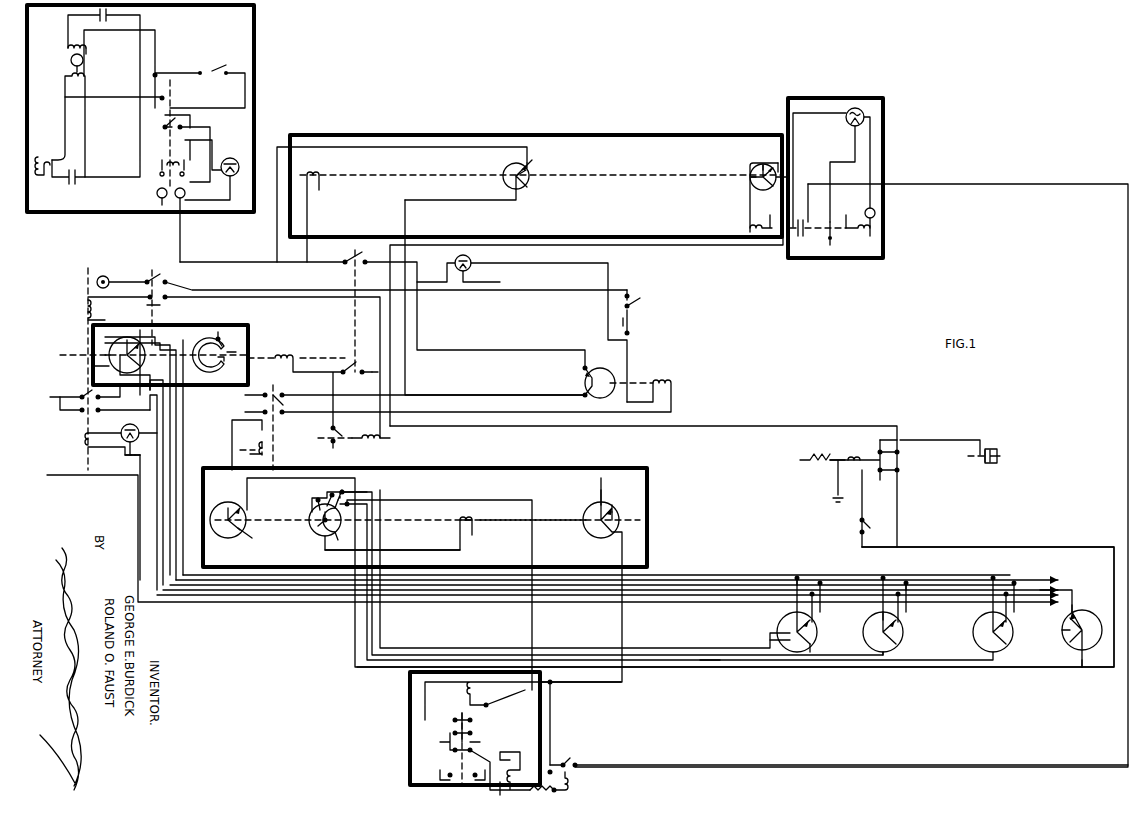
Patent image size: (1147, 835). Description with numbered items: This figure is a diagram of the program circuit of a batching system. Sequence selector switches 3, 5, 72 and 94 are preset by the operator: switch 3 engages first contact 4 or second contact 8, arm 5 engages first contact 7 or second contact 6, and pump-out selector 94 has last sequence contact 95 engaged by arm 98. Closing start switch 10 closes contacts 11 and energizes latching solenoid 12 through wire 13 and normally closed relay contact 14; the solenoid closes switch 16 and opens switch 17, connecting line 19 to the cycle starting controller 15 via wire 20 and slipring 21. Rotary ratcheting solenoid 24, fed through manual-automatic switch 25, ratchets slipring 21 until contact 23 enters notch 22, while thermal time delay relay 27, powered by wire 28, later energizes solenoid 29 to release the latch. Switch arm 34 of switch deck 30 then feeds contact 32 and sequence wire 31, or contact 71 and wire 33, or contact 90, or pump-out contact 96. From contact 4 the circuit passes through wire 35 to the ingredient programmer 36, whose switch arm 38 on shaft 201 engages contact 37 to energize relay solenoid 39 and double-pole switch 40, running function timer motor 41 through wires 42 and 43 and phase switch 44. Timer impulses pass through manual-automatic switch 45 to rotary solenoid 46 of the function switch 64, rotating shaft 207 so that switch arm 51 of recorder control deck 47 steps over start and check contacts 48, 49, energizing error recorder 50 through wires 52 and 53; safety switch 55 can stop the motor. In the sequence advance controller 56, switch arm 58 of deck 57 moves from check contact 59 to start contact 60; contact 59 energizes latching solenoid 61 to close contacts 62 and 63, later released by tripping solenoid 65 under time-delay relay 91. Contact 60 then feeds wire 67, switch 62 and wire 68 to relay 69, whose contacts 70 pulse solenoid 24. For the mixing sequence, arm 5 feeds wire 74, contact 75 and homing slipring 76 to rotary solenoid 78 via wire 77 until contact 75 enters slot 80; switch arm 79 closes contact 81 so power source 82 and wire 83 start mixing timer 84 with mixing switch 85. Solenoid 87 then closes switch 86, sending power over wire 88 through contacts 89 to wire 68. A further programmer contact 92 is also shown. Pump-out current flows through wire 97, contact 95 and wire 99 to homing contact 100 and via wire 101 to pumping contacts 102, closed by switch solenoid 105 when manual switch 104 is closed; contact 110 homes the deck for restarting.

The sequence selector switch 3 is at (777, 626).
The first contact 4 is at (797, 585).
The sequence selector switch arm 5 is at (893, 640).
The second contact 6 is at (906, 612).
The first contact 7 is at (875, 615).
The second contact 8 is at (805, 640).
The start switch 10 is at (170, 280).
The normally open contacts 11 is at (170, 300).
The latching solenoid 12 is at (84, 310).
The wire 13 is at (233, 297).
The normally closed relay contact 14 is at (900, 470).
The cycle starting controller 15 is at (207, 385).
The normally open switch 16 is at (80, 416).
The normally closed switch 17 is at (75, 392).
The power source line 19 is at (58, 400).
The wire 20 is at (150, 398).
The homing-deck slipring 21 is at (205, 345).
The notch 22 is at (236, 352).
The contact 23 is at (215, 330).
The rotary ratcheting solenoid 24 is at (283, 352).
The manual-automatic selector switch 25 is at (356, 365).
The thermal time delay relay 27 is at (140, 446).
The wire 28 is at (140, 433).
The solenoid 29 is at (84, 443).
The switch deck 30 is at (93, 366).
The sequence number one wire 31 is at (138, 488).
The contact 32 is at (127, 337).
The sequence number two wire 33 is at (172, 477).
The switch arm 34 is at (105, 355).
The wire 35 is at (702, 651).
The ingredient programmer 36 is at (513, 468).
The contact 37 is at (243, 510).
The switch arm 38 is at (254, 539).
The relay solenoid 39 is at (268, 452).
The normally open double-pole switch 40 is at (278, 418).
The function timer motor 41 is at (665, 378).
The wire 42 is at (580, 373).
The wire 43 is at (442, 262).
The normally closed phase switch 44 is at (630, 325).
The manual-automatic switch 45 is at (350, 270).
The rotary solenoid 46 is at (328, 170).
The recorder control deck-switch 47 is at (525, 185).
The start contact 48 is at (530, 163).
The check contact 49 is at (500, 170).
The error recorder 50 is at (254, 55).
The switch arm 51 is at (530, 172).
The wire 52 is at (405, 380).
The wire 53 is at (412, 145).
The normally closed safety switch 55 is at (634, 292).
The sequence advance controller 56 is at (848, 258).
The switch-deck 57 is at (757, 190).
The switch arm 58 is at (750, 180).
The check contact 59 is at (750, 166).
The start contact 60 is at (778, 160).
The latching solenoid 61 is at (752, 238).
The normally open contacts 62 is at (785, 242).
The normally open contacts 63 is at (856, 232).
The function switch 64 is at (632, 134).
The tripping solenoid 65 is at (872, 234).
The wire 67 is at (796, 180).
The wire 68 is at (702, 247).
The relay 69 is at (372, 443).
The contacts 70 is at (338, 432).
The number two ingredient contact 71 is at (142, 335).
The sequence selector switch 72 is at (973, 625).
The wire 74 is at (867, 655).
The contact 75 is at (345, 492).
The homing slipring 76 is at (316, 530).
The wire 77 is at (388, 555).
The rotary solenoid 78 is at (470, 515).
The switch arm 79 is at (598, 538).
The slot 80 is at (312, 518).
The contact 81 is at (624, 498).
The power source 82 is at (598, 492).
The wire 83 is at (578, 682).
The mixing timer 84 is at (408, 742).
The switch 85 is at (445, 768).
The normally open switch 86 is at (572, 758).
The solenoid 87 is at (570, 785).
The wire 88 is at (830, 765).
The normally closed contacts 89 is at (810, 240).
The number three ingredient contact 90 is at (150, 380).
The time-delay relay 91 is at (860, 108).
The switch contact 92 is at (360, 508).
The pump-out sequence selector 94 is at (1065, 648).
The last sequence contact 95 is at (1078, 612).
The pump-out contact 96 is at (105, 343).
The wire 97 is at (105, 337).
The selector arm 98 is at (1062, 630).
The wire 99 is at (1070, 667).
The homing contact 100 is at (314, 503).
The wire 101 is at (1080, 544).
The pumping contacts 102 is at (878, 448).
The switch 104 is at (858, 526).
The switch solenoid 105 is at (812, 452).
The contact 110 is at (326, 492).
The common shaft 201 is at (530, 530).
The function switch shaft 207 is at (396, 175).